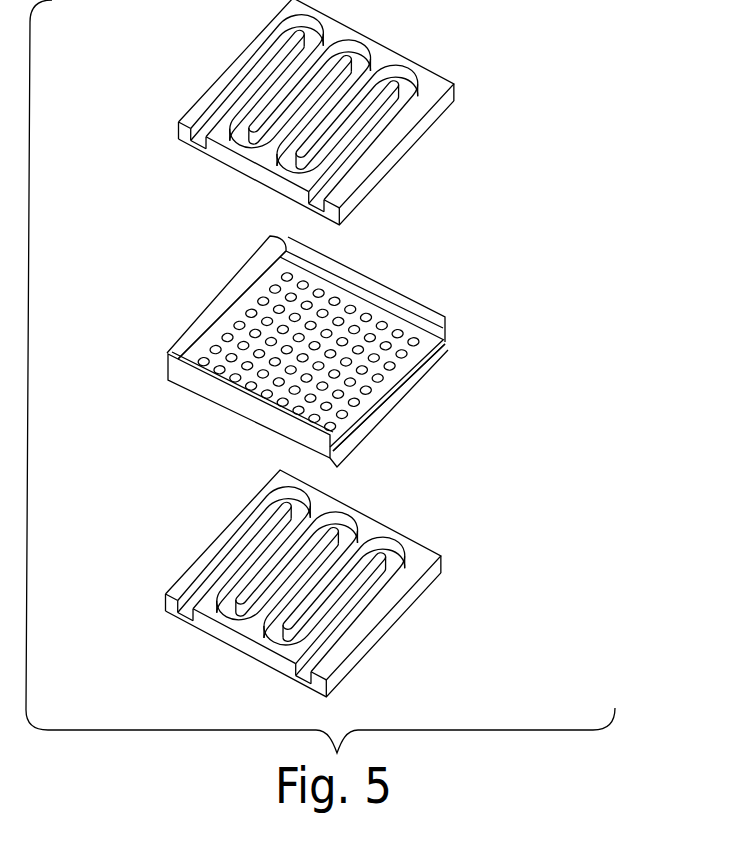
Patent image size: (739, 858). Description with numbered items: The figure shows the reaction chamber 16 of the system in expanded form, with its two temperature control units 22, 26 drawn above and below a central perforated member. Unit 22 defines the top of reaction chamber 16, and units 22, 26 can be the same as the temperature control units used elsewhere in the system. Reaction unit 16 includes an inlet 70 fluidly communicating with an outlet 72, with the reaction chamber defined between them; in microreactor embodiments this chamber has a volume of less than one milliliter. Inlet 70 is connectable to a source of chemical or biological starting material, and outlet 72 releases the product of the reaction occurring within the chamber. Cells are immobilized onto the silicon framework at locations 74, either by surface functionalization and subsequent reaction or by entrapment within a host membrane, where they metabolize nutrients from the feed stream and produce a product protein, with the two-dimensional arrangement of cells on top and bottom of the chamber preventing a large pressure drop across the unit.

The reaction chamber 16 is at (110, 307).
The temperature control unit 22 is at (390, 58).
The temperature control unit 26 is at (397, 617).
The inlet 70 is at (225, 298).
The outlet 72 is at (396, 421).
The locations 74 is at (382, 325).